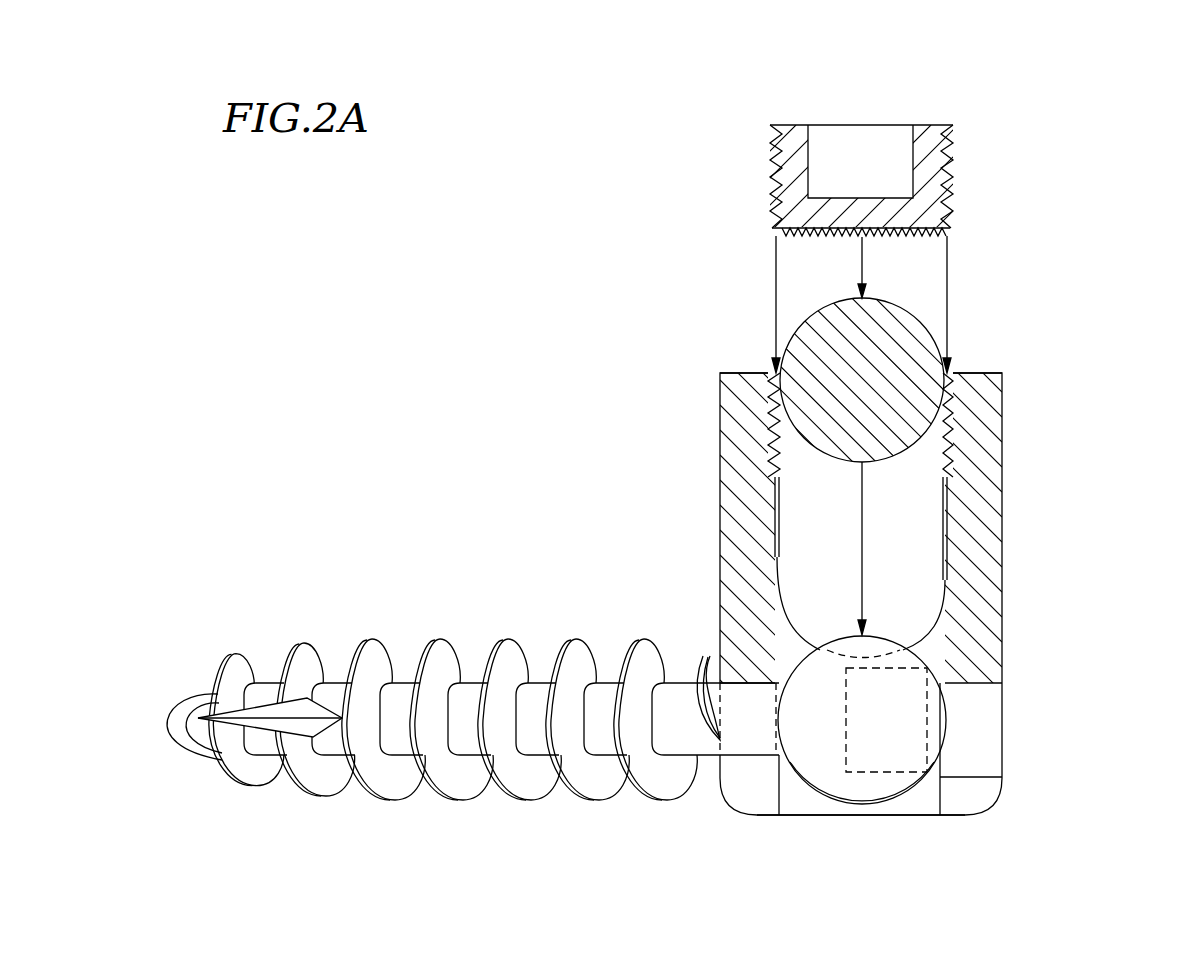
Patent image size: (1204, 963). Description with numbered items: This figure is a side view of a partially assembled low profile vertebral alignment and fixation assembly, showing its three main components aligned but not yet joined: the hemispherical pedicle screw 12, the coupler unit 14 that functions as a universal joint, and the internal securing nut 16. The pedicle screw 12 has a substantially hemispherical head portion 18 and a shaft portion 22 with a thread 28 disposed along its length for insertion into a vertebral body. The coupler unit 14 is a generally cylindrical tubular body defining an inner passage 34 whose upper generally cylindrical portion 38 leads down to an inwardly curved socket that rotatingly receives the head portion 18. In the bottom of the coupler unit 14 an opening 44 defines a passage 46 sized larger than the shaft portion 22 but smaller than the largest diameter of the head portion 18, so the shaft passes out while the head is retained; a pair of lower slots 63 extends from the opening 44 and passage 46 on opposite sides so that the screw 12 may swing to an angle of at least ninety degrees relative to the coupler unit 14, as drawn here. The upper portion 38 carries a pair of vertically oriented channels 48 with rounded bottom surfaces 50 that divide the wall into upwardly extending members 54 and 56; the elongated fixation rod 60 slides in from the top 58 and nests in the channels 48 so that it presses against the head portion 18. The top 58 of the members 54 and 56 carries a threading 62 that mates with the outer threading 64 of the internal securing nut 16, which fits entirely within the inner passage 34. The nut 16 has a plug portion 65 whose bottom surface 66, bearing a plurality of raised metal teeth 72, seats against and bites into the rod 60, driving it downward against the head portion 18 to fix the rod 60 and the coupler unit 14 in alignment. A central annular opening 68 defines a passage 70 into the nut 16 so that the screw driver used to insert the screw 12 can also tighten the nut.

The hemispherical pedicle screw 12 is at (632, 820).
The coupler unit 14 is at (645, 545).
The internal securing nut 16 is at (1124, 107).
The hemispherical head portion 18 is at (900, 648).
The shaft portion 22 is at (473, 658).
The thread 28 is at (530, 775).
The inner passage 34 is at (828, 540).
The upper generally cylindrical portion 38 is at (915, 465).
The opening 44 is at (880, 815).
The passage 46 is at (953, 778).
The channels 48 is at (943, 553).
The rounded bottom surfaces 50 is at (818, 648).
The upwardly extending member 54 is at (975, 515).
The upwardly extending member 56 is at (733, 528).
The top 58 is at (737, 372).
The elongated fixation rod 60 is at (905, 352).
The threading 62 is at (950, 420).
The lower slots 63 is at (762, 815).
The outer threading 64 is at (770, 176).
The plug portion 65 is at (950, 143).
The bottom surface 66 is at (778, 242).
The central annular opening 68 is at (828, 124).
The passage 70 is at (872, 155).
The raised metal teeth 72 is at (892, 236).